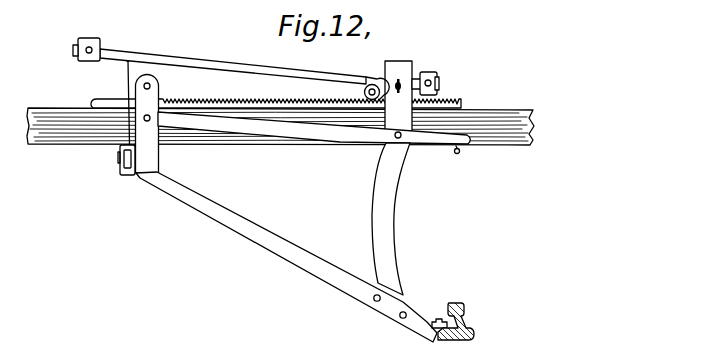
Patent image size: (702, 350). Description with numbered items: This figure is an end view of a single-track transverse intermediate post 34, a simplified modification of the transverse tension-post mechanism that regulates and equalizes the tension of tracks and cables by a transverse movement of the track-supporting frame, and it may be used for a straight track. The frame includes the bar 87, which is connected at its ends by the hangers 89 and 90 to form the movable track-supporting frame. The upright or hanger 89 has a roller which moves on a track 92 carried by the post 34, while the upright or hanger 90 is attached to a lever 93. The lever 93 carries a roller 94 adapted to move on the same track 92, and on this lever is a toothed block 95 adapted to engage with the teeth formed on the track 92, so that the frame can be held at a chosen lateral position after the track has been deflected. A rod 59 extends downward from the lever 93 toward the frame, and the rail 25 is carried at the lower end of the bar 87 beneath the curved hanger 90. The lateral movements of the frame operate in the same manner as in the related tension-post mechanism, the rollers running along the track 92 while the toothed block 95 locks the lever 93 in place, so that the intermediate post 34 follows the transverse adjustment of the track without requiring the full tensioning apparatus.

The rail 25 is at (463, 305).
The intermediate post 34 is at (513, 113).
The rod 59 is at (127, 82).
The bar 87 is at (297, 247).
The upright or hanger 89 is at (158, 160).
The upright or hanger 90 is at (392, 247).
The track 92 is at (457, 103).
The lever 93 is at (257, 62).
The roller 94 is at (365, 80).
The toothed block 95 is at (433, 75).